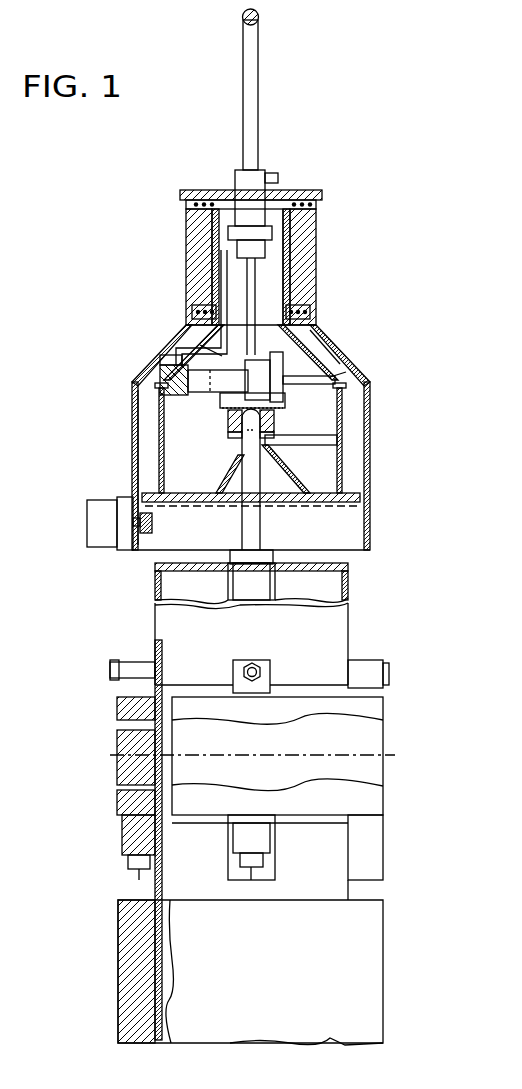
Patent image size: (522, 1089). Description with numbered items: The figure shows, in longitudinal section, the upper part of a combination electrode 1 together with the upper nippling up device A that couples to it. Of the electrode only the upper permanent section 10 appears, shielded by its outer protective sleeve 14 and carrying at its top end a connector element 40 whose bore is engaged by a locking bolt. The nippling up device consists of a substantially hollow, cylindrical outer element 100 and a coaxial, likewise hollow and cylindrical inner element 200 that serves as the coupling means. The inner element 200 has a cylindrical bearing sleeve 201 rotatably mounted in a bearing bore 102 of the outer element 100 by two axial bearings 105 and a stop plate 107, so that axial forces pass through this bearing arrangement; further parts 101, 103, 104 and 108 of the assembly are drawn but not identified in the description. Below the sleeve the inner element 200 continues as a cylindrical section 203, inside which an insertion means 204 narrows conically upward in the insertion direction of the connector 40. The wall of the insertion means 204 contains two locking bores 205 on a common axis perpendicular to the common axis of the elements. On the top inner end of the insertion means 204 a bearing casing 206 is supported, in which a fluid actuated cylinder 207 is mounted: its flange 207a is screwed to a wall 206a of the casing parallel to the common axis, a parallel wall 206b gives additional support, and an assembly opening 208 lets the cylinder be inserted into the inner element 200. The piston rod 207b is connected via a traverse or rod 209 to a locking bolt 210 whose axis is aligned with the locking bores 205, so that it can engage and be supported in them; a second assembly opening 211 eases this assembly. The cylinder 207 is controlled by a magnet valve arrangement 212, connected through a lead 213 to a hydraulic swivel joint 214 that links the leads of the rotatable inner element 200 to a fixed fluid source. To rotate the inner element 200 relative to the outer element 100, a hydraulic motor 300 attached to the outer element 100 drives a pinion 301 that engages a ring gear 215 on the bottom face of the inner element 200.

The combination electrode 1 is at (448, 790).
The upper permanent section 10 is at (386, 736).
The outer protective sleeve 14 is at (133, 957).
The connector element 40 is at (252, 518).
The outer element 100 is at (330, 335).
The housing wall 101 is at (300, 222).
The bearing bore 102 is at (210, 230).
The conical housing part 103 is at (190, 323).
The cylindrical housing wall 104 is at (135, 410).
The axial bearings 105 is at (205, 200).
The stop plate 107 is at (303, 192).
The drive rod 108 is at (254, 94).
The inner element 200 is at (352, 463).
The cylindrical bearing sleeve 201 is at (285, 258).
The cylindrical section 203 is at (160, 437).
The insertion means 204 is at (285, 490).
The locking bores 205 is at (230, 440).
The bearing casing 206 is at (271, 352).
The wall 206a is at (285, 395).
The wall 206b is at (228, 397).
The fluid actuated cylinder 207 is at (220, 355).
The flange 207a is at (330, 352).
The piston rod 207b is at (345, 368).
The assembly opening 208 is at (160, 376).
The traverse 209 is at (344, 432).
The locking bolt 210 is at (300, 443).
The second assembly opening 211 is at (305, 385).
The magnet valve arrangement 212 is at (176, 358).
The lead 213 is at (222, 280).
The swivel joint 214 is at (240, 172).
The ring gear 215 is at (355, 512).
The hydraulic motor 300 is at (100, 520).
The pinion 301 is at (150, 528).